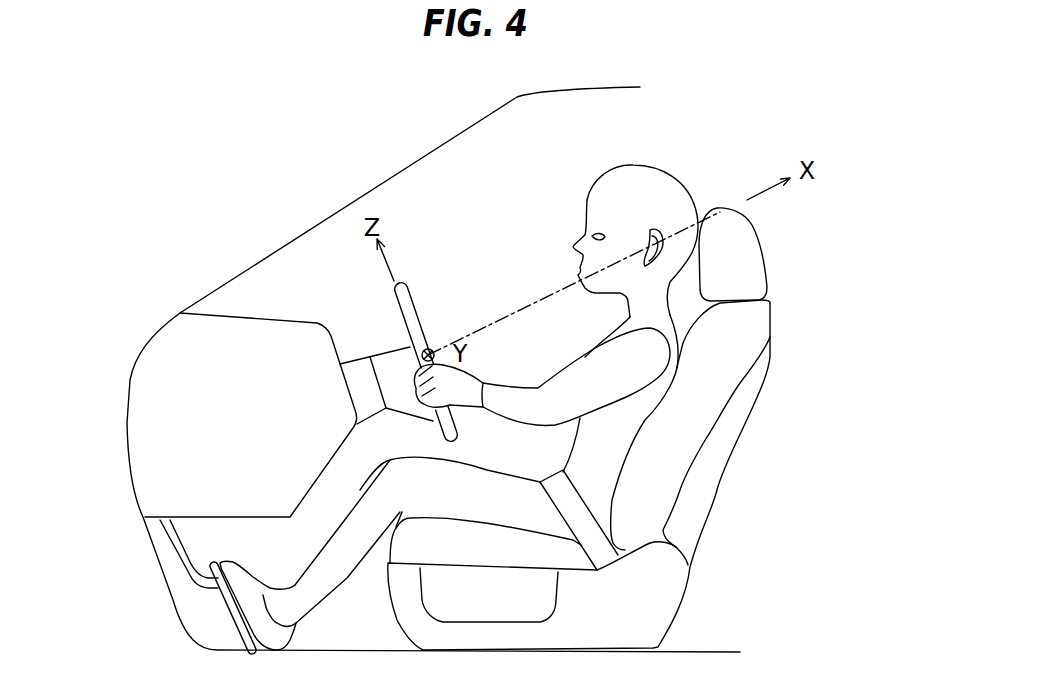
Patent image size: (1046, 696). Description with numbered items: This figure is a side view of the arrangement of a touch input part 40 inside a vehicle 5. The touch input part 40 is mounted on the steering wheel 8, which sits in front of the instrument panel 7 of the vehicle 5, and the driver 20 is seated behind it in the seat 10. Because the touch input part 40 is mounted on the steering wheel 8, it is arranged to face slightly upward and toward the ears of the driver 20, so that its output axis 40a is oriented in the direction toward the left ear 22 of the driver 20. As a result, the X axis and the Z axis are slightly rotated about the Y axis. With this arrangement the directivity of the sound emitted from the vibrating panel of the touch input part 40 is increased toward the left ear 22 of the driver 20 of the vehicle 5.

The vehicle 5 is at (214, 194).
The instrument panel 7 is at (332, 343).
The steering wheel 8 is at (389, 291).
The seat 10 is at (720, 480).
The driver 20 is at (650, 391).
The left ear 22 is at (655, 232).
The touch input part 40 is at (431, 347).
The output axis 40a is at (528, 303).